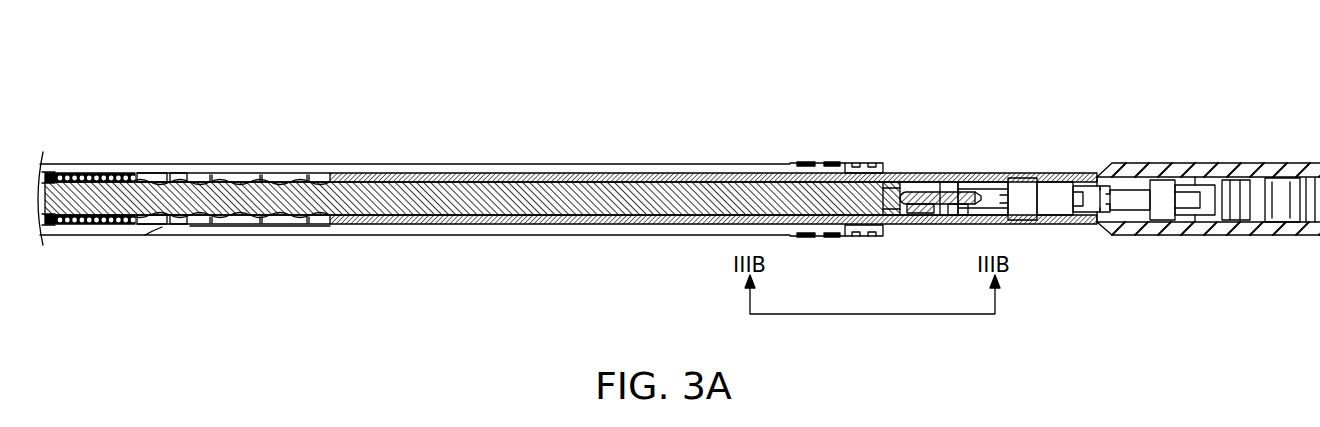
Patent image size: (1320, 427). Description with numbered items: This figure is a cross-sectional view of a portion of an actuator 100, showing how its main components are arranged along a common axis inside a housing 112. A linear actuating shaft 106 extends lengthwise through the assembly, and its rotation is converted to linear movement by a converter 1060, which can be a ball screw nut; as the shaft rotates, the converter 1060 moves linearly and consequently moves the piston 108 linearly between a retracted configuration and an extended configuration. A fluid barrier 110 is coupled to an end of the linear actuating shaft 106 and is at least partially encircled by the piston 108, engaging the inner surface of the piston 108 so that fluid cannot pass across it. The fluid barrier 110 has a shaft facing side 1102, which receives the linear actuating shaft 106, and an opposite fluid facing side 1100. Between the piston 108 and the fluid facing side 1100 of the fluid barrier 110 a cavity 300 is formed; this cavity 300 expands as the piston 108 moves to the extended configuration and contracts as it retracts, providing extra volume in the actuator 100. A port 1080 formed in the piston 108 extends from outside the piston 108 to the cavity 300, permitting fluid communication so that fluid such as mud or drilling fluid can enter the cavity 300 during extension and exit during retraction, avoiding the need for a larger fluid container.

The actuator 100 is at (1105, 72).
The linear actuating shaft 106 is at (424, 192).
The piston 108 is at (918, 174).
The fluid barrier 110 is at (958, 220).
The housing 112 is at (618, 170).
The cavity 300 is at (1010, 182).
The converter 1060 is at (255, 178).
The port 1080 is at (985, 186).
The fluid facing side 1100 is at (1047, 188).
The shaft facing side 1102 is at (882, 171).